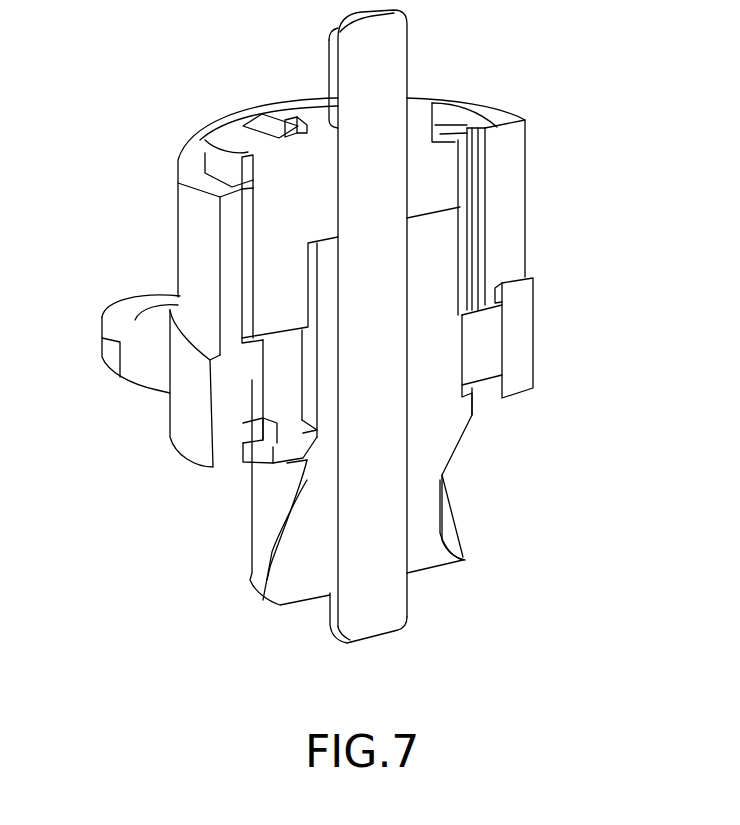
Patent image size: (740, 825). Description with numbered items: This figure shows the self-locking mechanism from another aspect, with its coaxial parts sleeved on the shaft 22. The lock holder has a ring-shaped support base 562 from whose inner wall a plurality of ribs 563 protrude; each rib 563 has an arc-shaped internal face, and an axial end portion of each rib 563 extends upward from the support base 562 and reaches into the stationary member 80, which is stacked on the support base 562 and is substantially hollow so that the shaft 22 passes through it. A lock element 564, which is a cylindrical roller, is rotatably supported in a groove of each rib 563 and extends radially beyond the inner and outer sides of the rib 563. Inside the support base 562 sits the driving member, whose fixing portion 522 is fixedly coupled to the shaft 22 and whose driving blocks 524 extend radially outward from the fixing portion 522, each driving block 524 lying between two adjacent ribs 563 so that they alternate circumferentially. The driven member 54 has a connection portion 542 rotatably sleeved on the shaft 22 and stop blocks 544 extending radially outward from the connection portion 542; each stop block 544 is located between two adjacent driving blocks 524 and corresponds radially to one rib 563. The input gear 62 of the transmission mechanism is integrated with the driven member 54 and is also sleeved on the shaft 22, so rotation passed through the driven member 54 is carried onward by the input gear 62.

The shaft 22 is at (380, 62).
The driven member 54 is at (200, 398).
The connection portion 542 is at (276, 360).
The stop block 544 is at (325, 365).
The support base 562 is at (193, 237).
The rib 563 is at (260, 128).
The lock element 564 is at (477, 360).
The fixing portion 522 is at (273, 163).
The driving block 524 is at (237, 187).
The stationary member 80 is at (517, 322).
The input gear 62 is at (423, 537).